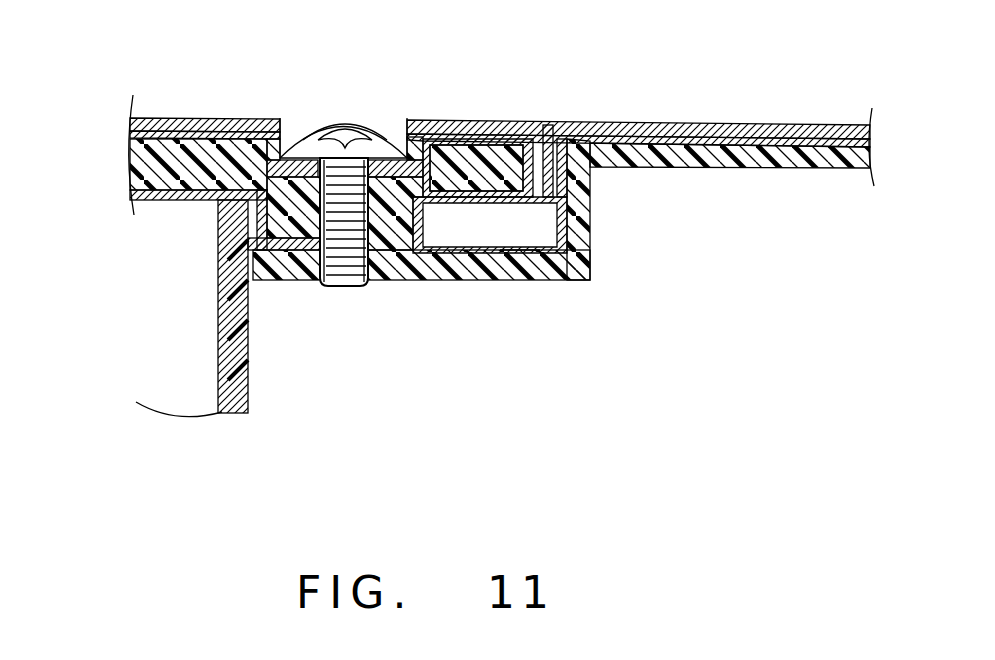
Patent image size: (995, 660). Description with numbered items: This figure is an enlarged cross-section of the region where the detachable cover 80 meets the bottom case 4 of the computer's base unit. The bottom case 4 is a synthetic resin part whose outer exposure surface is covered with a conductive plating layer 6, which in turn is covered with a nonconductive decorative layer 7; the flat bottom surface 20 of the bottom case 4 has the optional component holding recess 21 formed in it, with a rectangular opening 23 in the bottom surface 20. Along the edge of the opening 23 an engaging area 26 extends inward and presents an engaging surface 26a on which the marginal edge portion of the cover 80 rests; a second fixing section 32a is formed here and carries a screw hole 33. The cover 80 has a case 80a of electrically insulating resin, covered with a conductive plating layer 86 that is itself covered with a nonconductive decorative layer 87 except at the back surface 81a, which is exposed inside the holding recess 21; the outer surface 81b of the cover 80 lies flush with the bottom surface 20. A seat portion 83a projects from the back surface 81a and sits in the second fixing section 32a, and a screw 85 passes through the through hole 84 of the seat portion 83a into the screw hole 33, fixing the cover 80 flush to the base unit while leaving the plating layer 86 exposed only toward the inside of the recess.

The bottom case 4 is at (590, 228).
The plating layer 6 is at (288, 118).
The decorative layer 7 is at (648, 138).
The bottom surface 20 is at (826, 125).
The holding recess 21 is at (182, 386).
The opening 23 is at (546, 122).
The engaging area 26 is at (578, 280).
The engaging surface 26a is at (466, 222).
The second fixing section 32a is at (516, 256).
The screw hole 33 is at (370, 288).
The cover 80 is at (479, 117).
The case 80a is at (148, 158).
The back surface 81a is at (205, 200).
The surface 81b is at (168, 118).
The seat portion 83a is at (410, 258).
The through hole 84 is at (303, 245).
The screw 85 is at (362, 130).
The plating layer 86 is at (143, 202).
The decorative layer 87 is at (214, 118).